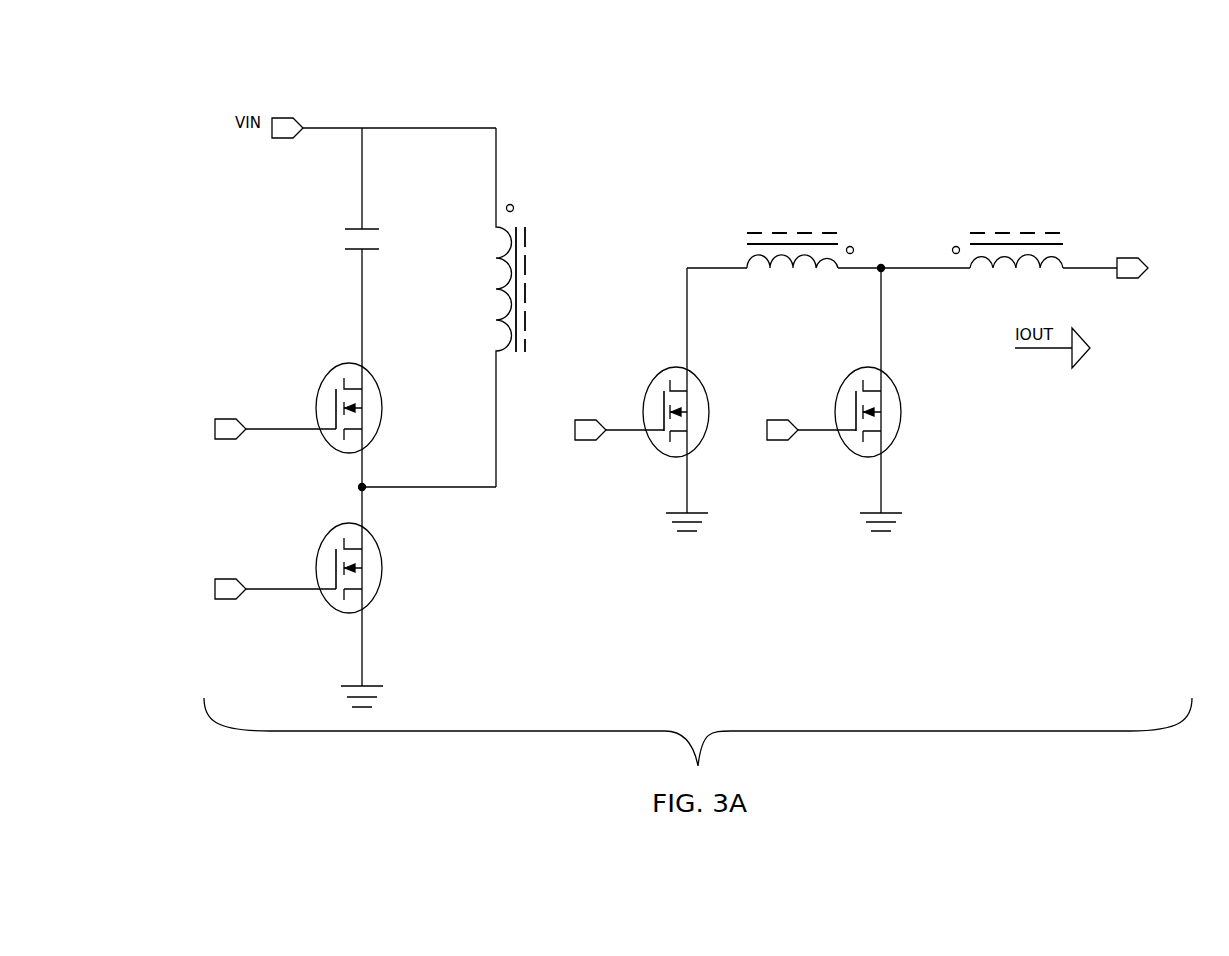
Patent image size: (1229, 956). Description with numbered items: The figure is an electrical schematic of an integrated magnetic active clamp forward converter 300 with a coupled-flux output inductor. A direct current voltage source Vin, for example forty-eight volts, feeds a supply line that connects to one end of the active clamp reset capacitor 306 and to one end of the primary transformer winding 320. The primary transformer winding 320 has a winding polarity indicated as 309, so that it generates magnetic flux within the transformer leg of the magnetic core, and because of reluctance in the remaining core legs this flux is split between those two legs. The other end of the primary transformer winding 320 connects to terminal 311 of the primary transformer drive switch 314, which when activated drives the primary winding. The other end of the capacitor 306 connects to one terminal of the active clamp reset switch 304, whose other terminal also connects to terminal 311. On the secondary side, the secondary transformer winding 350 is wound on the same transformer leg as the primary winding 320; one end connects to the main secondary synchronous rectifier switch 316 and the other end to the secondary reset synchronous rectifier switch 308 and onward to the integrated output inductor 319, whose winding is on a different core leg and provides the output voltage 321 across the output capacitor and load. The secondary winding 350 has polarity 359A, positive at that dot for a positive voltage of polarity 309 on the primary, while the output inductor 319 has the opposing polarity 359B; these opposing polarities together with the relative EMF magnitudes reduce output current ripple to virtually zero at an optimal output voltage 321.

The integrated magnetic active clamp forward converter 300 is at (213, 85).
The active clamp reset switch 304 is at (320, 386).
The active clamp reset capacitor 306 is at (378, 216).
The secondary reset synchronous rectifier switch 308 is at (841, 390).
The winding polarity of primary transformer winding 309 is at (518, 200).
The terminal 311 is at (360, 485).
The primary transformer drive switch 314 is at (320, 547).
The main secondary synchronous rectifier switch 316 is at (650, 390).
The integrated output inductor 319 is at (1065, 255).
The primary transformer winding 320 is at (532, 287).
The output voltage 321 is at (1179, 251).
The secondary transformer winding 350 is at (793, 225).
The winding polarity of secondary transformer winding 359A is at (855, 237).
The winding polarity of integrated output inductor 359B is at (940, 230).